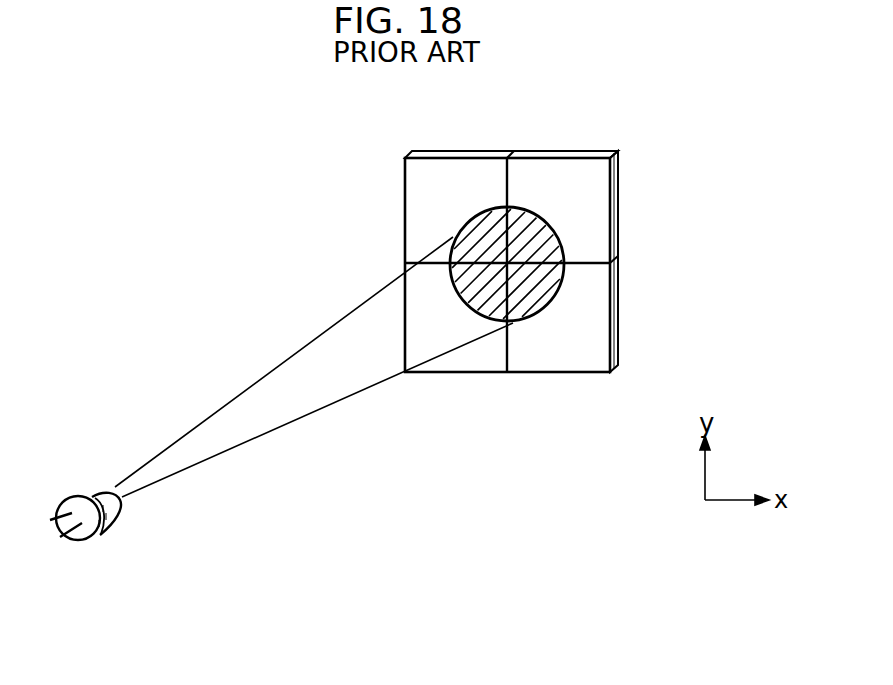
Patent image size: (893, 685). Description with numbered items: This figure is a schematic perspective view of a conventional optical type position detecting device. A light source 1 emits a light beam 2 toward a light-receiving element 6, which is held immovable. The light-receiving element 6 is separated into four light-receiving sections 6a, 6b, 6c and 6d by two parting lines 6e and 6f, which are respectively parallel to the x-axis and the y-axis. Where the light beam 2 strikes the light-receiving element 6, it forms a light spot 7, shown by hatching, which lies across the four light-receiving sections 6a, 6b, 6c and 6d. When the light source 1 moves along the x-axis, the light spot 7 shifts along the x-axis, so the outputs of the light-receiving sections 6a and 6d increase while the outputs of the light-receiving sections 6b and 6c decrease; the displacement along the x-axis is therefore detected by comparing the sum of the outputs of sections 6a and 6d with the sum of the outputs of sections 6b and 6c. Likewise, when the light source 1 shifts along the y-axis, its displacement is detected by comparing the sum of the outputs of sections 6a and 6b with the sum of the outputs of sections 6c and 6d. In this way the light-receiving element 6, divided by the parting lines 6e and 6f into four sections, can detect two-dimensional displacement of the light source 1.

The light source 1 is at (74, 497).
The light beam 2 is at (184, 433).
The light-receiving element 6 is at (616, 140).
The light-receiving section 6a is at (550, 175).
The light-receiving section 6b is at (432, 177).
The light-receiving section 6c is at (472, 358).
The light-receiving section 6d is at (553, 358).
The parting line 6e is at (587, 264).
The parting line 6f is at (506, 184).
The light spot 7 is at (548, 230).